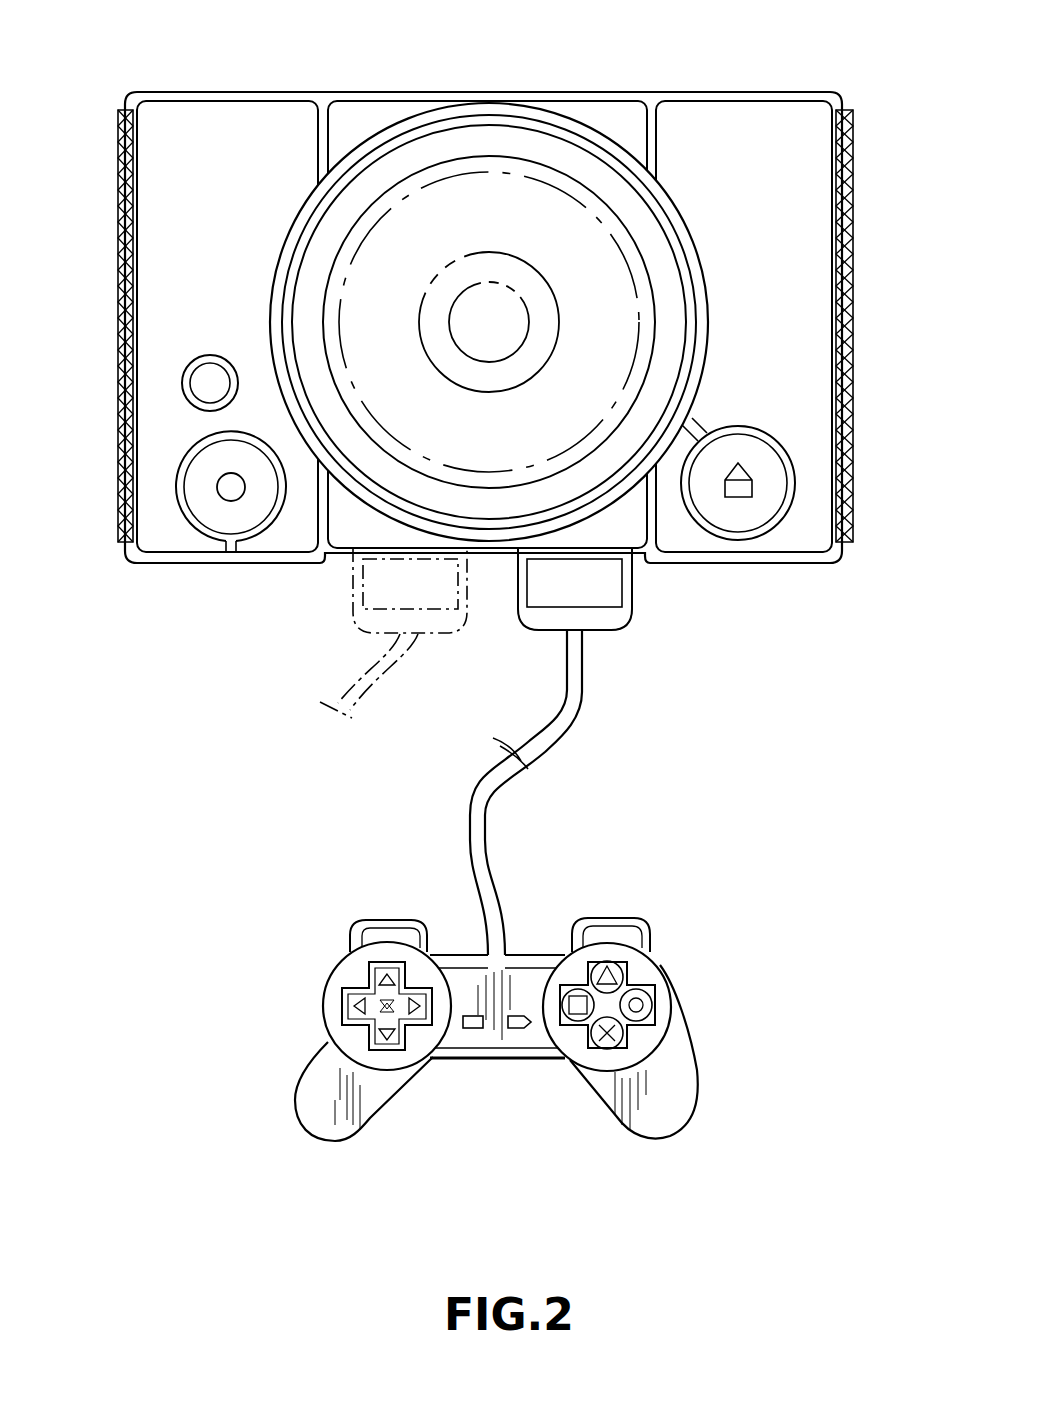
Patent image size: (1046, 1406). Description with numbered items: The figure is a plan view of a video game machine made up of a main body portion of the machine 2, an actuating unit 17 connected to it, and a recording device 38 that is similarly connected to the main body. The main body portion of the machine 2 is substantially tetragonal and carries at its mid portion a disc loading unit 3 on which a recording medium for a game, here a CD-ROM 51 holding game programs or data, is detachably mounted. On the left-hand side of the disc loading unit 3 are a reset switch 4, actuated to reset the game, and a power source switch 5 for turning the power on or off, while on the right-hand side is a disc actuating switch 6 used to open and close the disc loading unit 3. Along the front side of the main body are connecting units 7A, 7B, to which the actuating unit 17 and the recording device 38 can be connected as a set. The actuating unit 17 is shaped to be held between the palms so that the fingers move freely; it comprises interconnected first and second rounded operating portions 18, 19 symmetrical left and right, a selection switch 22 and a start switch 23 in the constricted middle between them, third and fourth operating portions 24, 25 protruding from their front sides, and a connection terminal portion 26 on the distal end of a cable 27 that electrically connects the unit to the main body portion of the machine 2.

The main body portion of the machine 2 is at (652, 78).
The disc loading unit 3 is at (472, 130).
The CD-ROM 51 is at (425, 166).
The reset switch 4 is at (205, 355).
The power source switch 5 is at (202, 510).
The disc actuating switch 6 is at (752, 518).
The connecting unit 7A is at (632, 537).
The connecting unit 7B is at (385, 540).
The connection terminal portion 26 is at (630, 628).
The recording device 38 is at (602, 645).
The cable 27 is at (482, 805).
The actuating unit 17 is at (502, 1025).
The first rounded operating portion 18 is at (372, 995).
The second rounded operating portion 19 is at (630, 1020).
The selection switch 22 is at (469, 1030).
The start switch 23 is at (521, 1032).
The third operating portion 24 is at (378, 920).
The fourth operating portion 25 is at (608, 918).